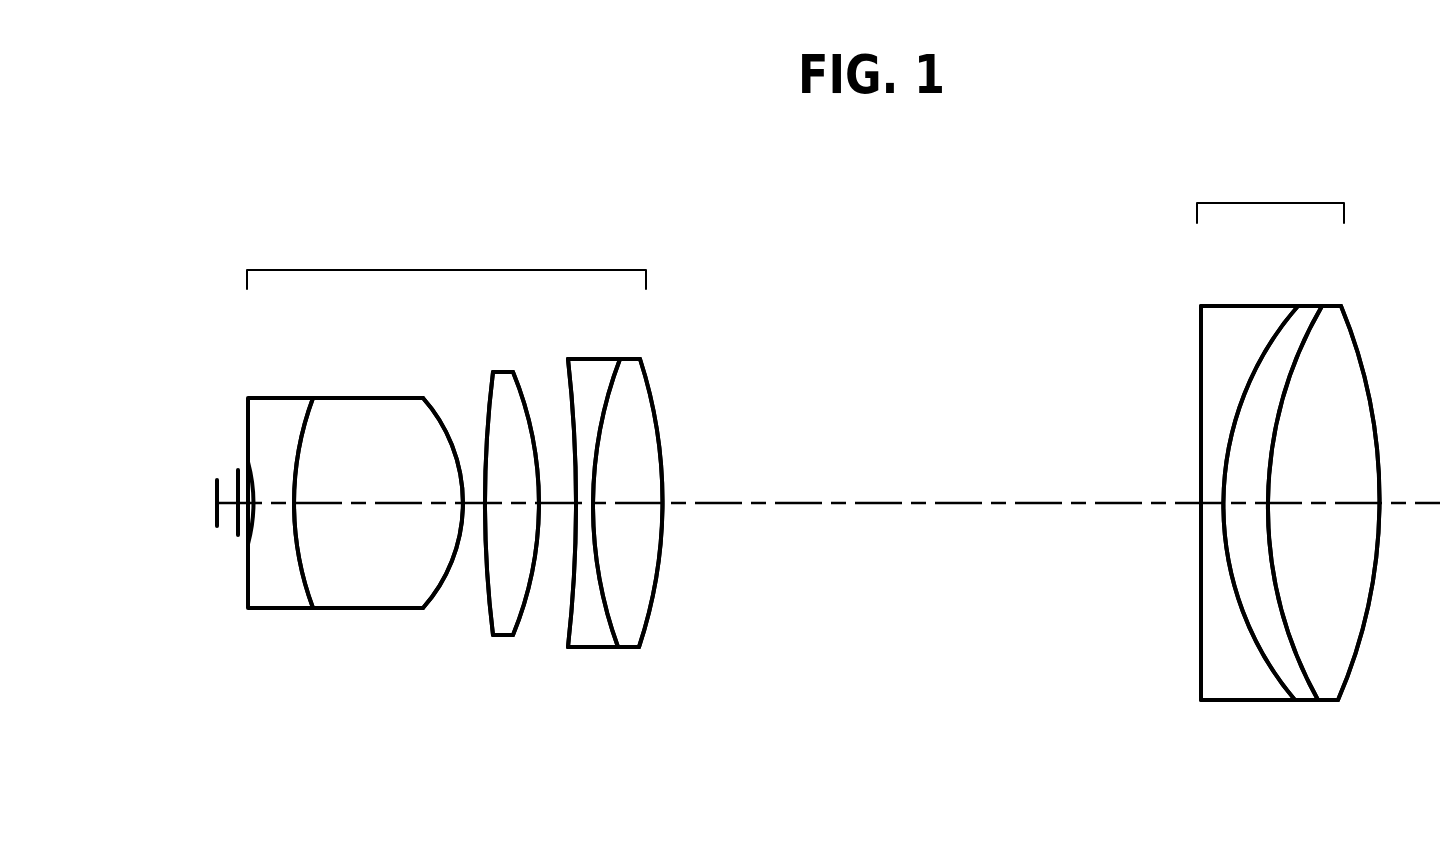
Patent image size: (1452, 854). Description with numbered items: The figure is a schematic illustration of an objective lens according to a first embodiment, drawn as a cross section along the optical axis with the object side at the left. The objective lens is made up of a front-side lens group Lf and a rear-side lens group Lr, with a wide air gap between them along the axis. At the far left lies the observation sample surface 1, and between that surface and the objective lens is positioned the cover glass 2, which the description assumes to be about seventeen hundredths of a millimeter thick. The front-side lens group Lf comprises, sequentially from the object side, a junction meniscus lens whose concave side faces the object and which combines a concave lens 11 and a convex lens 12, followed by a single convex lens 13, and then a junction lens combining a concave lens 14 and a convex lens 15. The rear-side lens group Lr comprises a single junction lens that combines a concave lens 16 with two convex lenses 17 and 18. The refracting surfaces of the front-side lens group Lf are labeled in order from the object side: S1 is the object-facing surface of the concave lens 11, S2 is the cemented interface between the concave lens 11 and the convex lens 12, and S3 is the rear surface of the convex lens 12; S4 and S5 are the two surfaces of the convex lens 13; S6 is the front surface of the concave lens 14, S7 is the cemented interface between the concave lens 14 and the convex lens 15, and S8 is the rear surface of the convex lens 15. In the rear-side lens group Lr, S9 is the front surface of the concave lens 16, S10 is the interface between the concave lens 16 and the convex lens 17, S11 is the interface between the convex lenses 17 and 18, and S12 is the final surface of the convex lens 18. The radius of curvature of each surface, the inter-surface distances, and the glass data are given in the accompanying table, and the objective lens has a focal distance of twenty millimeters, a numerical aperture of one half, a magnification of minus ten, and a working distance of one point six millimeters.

The observation sample surface 1 is at (215, 495).
The cover glass 2 is at (236, 480).
The concave lens 11 is at (285, 397).
The convex lens 12 is at (367, 397).
The convex lens 13 is at (505, 370).
The concave lens 14 is at (583, 357).
The convex lens 15 is at (628, 357).
The concave lens 16 is at (1242, 305).
The convex lens 17 is at (1315, 305).
The convex lens 18 is at (1333, 305).
The front-side lens group Lf is at (446, 265).
The rear-side lens group Lr is at (1270, 199).
The lens surface S1 is at (247, 530).
The lens surface S2 is at (307, 588).
The lens surface S3 is at (447, 585).
The lens surface S4 is at (490, 602).
The lens surface S5 is at (528, 602).
The lens surface S6 is at (568, 623).
The lens surface S7 is at (607, 617).
The lens surface S8 is at (650, 617).
The lens surface S9 is at (1200, 652).
The lens surface S10 is at (1267, 662).
The lens surface S11 is at (1300, 672).
The lens surface S12 is at (1358, 658).